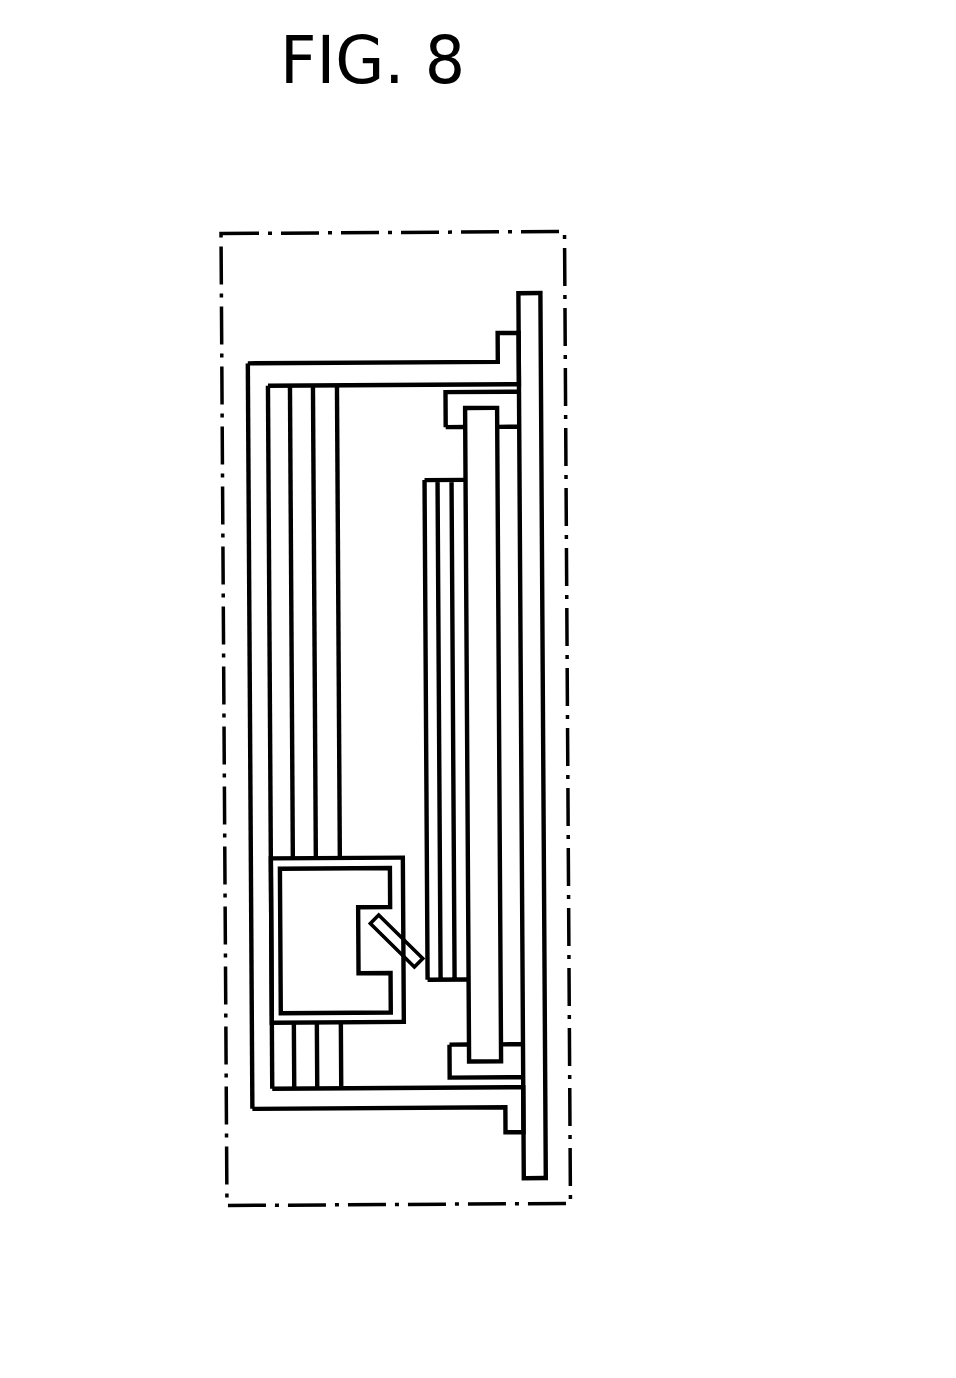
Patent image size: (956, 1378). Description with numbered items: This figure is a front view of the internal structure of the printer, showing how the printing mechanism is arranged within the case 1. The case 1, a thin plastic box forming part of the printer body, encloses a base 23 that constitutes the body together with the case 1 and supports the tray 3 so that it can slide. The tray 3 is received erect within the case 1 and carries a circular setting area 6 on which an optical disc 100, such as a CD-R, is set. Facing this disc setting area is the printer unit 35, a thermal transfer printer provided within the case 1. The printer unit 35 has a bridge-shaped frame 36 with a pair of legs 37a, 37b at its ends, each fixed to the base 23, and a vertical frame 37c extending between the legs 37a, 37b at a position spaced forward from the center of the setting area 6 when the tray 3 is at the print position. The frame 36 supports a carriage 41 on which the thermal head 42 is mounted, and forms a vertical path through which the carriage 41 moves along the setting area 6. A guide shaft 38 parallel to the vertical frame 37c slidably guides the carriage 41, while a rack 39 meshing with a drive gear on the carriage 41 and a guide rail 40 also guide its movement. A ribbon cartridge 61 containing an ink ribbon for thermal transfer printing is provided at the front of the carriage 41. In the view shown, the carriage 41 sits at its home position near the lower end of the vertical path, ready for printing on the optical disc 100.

The case 1 is at (296, 1207).
The tray 3 is at (551, 735).
The setting area 6 is at (458, 558).
The base 23 is at (538, 927).
The printer unit 35 is at (258, 964).
The frame 36 is at (226, 716).
The leg 37a is at (392, 1097).
The leg 37b is at (385, 378).
The vertical frame 37c is at (255, 535).
The guide shaft 38 is at (207, 620).
The rack 39 is at (283, 802).
The guide rail 40 is at (320, 410).
The carriage 41 is at (305, 1023).
The thermal head 42 is at (387, 940).
The ribbon cartridge 61 is at (297, 987).
The optical disc 100 is at (428, 509).